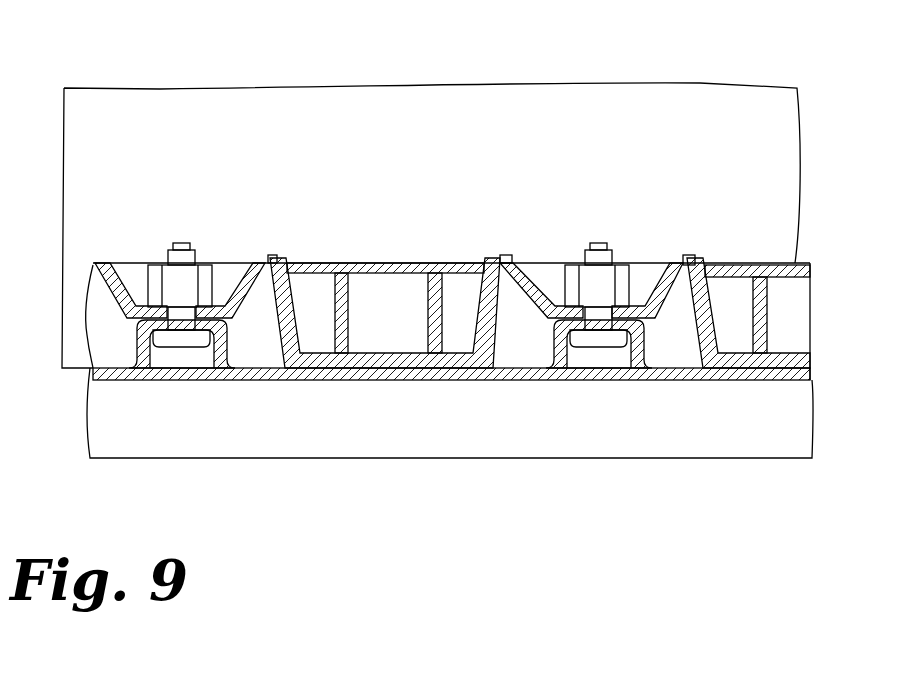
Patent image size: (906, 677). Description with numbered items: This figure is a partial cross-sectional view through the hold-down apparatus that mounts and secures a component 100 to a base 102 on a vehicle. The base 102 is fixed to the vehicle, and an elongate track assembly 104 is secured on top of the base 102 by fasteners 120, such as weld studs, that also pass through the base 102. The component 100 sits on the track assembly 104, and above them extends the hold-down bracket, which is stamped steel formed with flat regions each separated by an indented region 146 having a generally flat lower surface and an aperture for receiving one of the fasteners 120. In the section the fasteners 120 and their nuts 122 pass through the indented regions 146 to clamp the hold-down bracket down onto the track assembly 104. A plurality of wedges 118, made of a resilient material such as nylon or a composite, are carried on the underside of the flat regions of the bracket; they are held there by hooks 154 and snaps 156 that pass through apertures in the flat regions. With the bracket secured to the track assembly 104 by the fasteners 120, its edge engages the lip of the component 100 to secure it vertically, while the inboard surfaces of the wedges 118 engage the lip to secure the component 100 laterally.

The component 100 is at (133, 110).
The base 102 is at (192, 445).
The track assembly 104 is at (298, 378).
The wedges 118 is at (387, 366).
The fasteners 120 is at (185, 243).
The nuts 122 is at (148, 284).
The indented region 146 is at (557, 283).
The hook connectors 154 is at (500, 255).
The snap connectors 156 is at (278, 253).